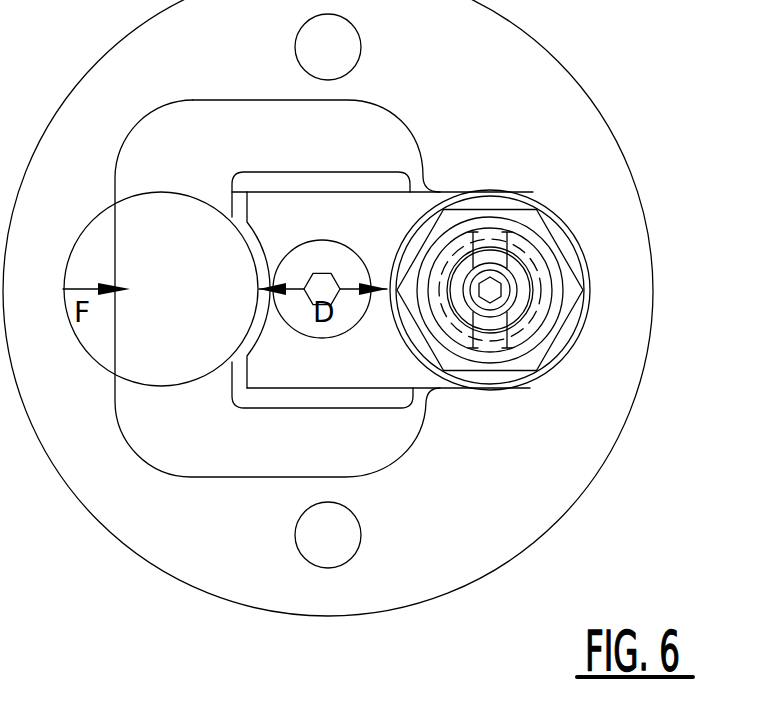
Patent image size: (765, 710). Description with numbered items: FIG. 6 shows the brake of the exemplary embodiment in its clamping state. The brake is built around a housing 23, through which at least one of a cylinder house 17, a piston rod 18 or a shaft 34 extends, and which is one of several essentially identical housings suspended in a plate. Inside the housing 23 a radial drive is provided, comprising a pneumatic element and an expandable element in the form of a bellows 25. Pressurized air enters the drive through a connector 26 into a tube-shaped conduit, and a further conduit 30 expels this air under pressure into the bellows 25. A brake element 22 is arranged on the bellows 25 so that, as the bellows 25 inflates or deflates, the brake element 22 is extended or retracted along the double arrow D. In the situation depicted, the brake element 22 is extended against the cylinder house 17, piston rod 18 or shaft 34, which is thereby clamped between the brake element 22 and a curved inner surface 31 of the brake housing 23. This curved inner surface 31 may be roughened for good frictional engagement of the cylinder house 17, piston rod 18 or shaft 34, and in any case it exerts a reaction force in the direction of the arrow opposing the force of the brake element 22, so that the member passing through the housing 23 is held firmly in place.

The housing 23 is at (188, 552).
The shaft 34 is at (273, 269).
The cylinder house 17 is at (273, 269).
The piston rod 18 is at (163, 197).
The brake element 22 is at (265, 183).
The curved inner surface 31 is at (100, 365).
The bellows 25 is at (378, 368).
The connector 26 is at (520, 265).
The conduit 30 is at (495, 352).